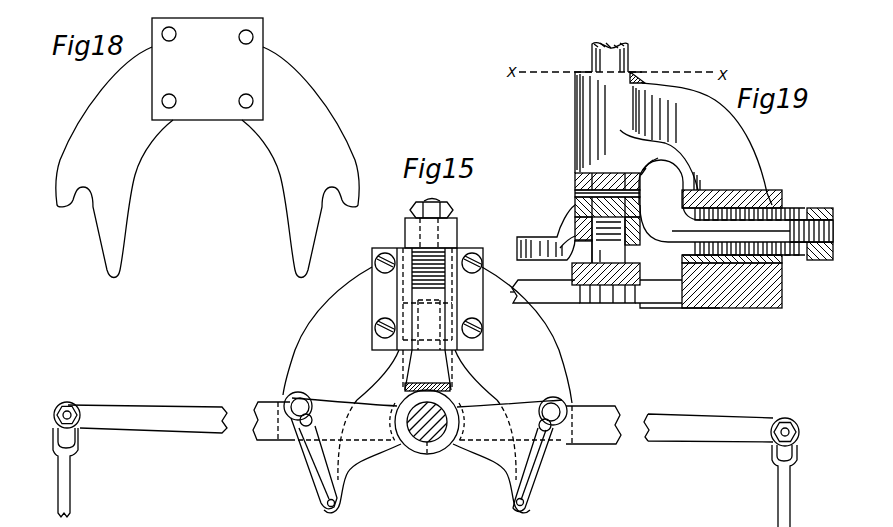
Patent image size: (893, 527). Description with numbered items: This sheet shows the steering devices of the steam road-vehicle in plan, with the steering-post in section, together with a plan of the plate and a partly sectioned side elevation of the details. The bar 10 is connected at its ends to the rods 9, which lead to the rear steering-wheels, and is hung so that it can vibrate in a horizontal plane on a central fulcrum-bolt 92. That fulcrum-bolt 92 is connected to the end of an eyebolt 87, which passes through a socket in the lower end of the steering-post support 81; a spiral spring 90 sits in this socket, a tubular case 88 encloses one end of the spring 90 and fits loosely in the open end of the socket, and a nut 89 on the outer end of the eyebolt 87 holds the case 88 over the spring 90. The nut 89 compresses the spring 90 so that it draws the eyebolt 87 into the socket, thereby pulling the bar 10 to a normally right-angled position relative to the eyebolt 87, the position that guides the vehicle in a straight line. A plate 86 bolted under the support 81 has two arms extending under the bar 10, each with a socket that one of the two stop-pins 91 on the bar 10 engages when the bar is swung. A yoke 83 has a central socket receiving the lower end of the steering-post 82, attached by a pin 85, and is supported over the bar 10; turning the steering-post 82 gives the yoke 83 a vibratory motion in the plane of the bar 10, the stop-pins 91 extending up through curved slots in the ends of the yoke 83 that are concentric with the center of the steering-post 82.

In FIG. 15, the rods 9 is at (72, 495).
In FIG. 15, the bar 10 is at (420, 423).
In FIG. 19, the bar 10 is at (645, 272).
In FIG. 15, the steering-post support 81 is at (457, 370).
In FIG. 19, the steering-post support 81 is at (673, 138).
In FIG. 15, the steering-post 82 is at (423, 460).
In FIG. 19, the steering-post 82 is at (593, 57).
In FIG. 15, the yoke 83 is at (290, 467).
In FIG. 19, the yoke 83 is at (536, 232).
In FIG. 19, the pin 85 is at (575, 192).
In FIG. 18, the plate 86 is at (207, 148).
In FIG. 15, the plate 86 is at (427, 390).
In FIG. 19, the plate 86 is at (537, 295).
In FIG. 15, the eyebolt 87 is at (430, 200).
In FIG. 19, the eyebolt 87 is at (736, 220).
In FIG. 15, the tubular case 88 is at (457, 237).
In FIG. 19, the tubular case 88 is at (787, 207).
In FIG. 15, the nut 89 is at (455, 212).
In FIG. 19, the nut 89 is at (823, 263).
In FIG. 19, the spiral spring 90 is at (725, 213).
In FIG. 15, the stop-pins 91 is at (285, 387).
In FIG. 19, the stop-pins 91 is at (580, 228).
In FIG. 19, the fulcrum-bolt 92 is at (602, 303).